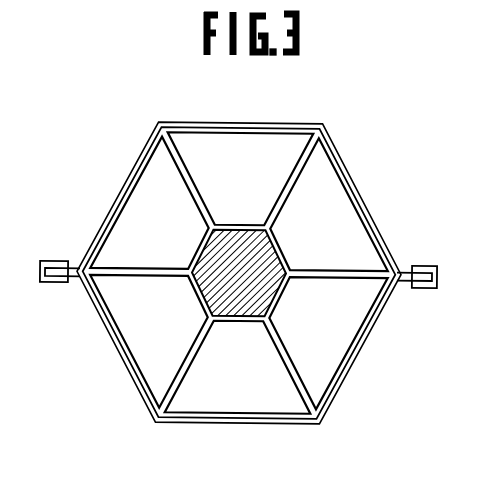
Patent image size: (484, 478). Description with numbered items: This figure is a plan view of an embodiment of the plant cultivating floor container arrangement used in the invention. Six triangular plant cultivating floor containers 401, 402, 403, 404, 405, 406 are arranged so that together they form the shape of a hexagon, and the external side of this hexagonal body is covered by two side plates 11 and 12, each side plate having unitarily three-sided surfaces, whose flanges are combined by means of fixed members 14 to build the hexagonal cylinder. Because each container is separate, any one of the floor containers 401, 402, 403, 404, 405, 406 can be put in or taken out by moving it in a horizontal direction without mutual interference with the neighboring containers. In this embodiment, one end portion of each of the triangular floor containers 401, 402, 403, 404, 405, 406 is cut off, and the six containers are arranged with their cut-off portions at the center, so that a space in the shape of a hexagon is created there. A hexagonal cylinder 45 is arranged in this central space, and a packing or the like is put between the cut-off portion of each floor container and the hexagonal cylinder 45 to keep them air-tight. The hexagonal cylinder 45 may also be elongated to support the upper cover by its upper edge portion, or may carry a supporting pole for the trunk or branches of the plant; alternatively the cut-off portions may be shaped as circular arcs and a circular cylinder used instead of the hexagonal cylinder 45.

The side plate 11 is at (347, 385).
The side plate 12 is at (336, 143).
The fixed member 14 is at (55, 285).
The hexagonal cylinder 45 is at (272, 292).
The triangular plant cultivating floor container 401 is at (148, 341).
The triangular plant cultivating floor container 402 is at (238, 367).
The triangular plant cultivating floor container 403 is at (327, 343).
The triangular plant cultivating floor container 404 is at (329, 204).
The triangular plant cultivating floor container 405 is at (240, 179).
The triangular plant cultivating floor container 406 is at (149, 202).